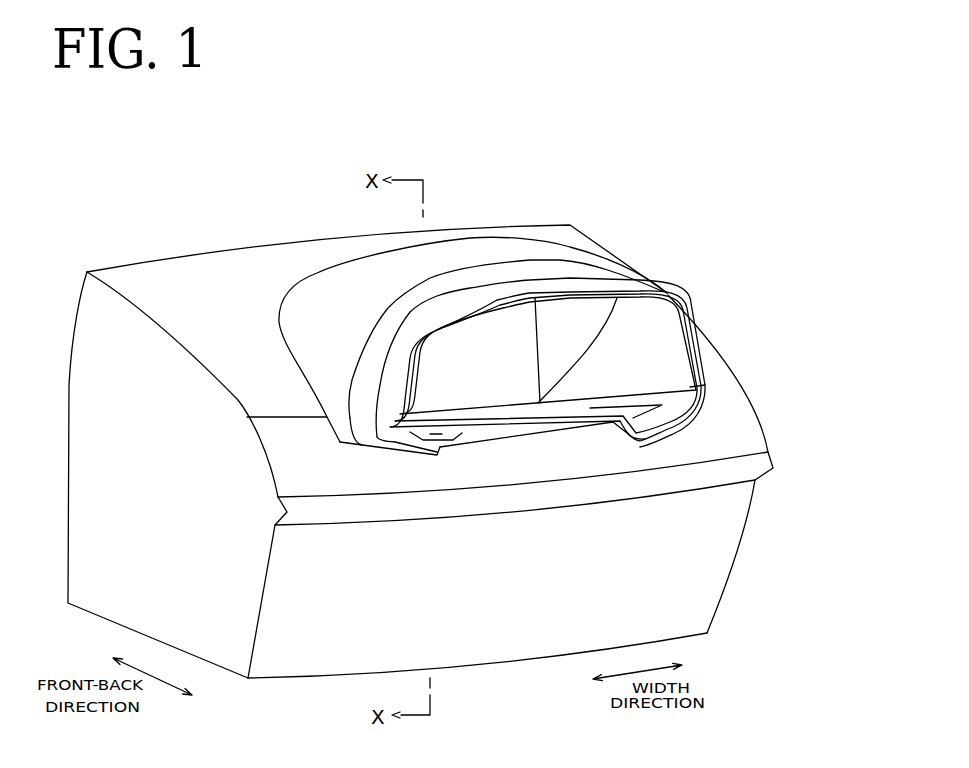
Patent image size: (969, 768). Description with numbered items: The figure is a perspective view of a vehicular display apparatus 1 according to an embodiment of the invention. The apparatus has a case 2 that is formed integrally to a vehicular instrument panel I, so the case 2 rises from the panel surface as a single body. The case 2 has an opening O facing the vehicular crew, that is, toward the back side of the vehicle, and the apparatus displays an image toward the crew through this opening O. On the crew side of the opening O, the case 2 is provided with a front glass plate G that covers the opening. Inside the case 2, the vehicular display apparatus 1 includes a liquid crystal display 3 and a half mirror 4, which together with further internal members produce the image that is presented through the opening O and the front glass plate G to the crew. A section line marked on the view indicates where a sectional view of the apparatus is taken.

The vehicular instrument panel I is at (247, 260).
The vehicular display apparatus 1 is at (670, 267).
The case 2 is at (698, 333).
The liquid crystal display 3 is at (513, 333).
The half mirror 4 is at (593, 358).
The front glass plate G is at (688, 388).
The opening O is at (567, 383).